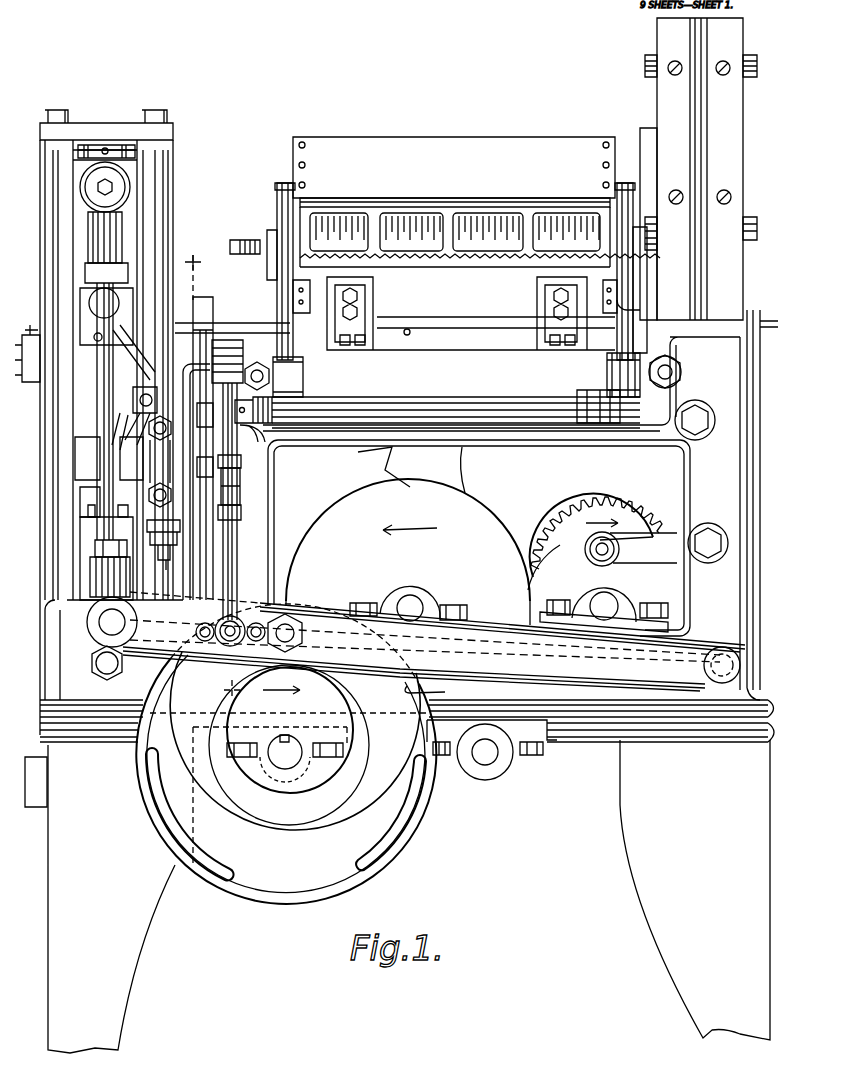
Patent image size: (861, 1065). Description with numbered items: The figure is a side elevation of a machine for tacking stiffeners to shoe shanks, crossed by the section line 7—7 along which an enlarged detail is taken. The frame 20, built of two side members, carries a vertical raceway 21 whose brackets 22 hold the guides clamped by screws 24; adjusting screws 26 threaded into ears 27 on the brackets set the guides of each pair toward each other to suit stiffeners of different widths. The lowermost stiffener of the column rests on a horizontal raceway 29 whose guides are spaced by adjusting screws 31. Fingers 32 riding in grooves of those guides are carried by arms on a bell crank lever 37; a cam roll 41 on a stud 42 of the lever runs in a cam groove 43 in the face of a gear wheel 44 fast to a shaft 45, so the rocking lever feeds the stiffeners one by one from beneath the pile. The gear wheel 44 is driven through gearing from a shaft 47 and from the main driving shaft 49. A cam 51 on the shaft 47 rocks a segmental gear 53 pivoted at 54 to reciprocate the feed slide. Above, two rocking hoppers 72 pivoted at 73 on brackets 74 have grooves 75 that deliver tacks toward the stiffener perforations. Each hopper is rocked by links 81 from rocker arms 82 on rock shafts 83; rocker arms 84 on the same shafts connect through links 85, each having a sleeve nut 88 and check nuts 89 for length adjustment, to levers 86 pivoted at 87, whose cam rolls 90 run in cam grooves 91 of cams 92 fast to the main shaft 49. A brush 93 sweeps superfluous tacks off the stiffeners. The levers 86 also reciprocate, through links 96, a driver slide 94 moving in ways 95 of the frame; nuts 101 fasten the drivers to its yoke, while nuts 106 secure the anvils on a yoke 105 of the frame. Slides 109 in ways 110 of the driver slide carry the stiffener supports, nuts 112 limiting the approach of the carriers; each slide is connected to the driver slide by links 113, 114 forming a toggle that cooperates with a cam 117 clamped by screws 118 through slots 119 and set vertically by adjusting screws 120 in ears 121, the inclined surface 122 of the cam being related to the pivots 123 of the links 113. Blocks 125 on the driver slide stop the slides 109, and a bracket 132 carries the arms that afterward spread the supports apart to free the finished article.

The section line 7— 7 is at (290, 475).
The frame 20 is at (692, 462).
The vertical raceway 21 is at (716, 169).
The brackets 22 is at (666, 118).
The screws 24 is at (675, 75).
The adjusting screws 26 is at (645, 66).
The ears 27 is at (650, 80).
The horizontal raceway 29 is at (470, 330).
The adjusting screws 31 is at (257, 370).
The fingers 32 is at (766, 318).
The bell crank lever 37 is at (665, 535).
The cam roll 41 is at (590, 558).
The stud 42 is at (605, 549).
The cam groove 43 is at (560, 550).
The gear wheel 44 is at (587, 500).
The shaft 45 is at (604, 622).
The shaft 47 is at (409, 605).
The main driving shaft 49 is at (288, 770).
The cam 51 is at (480, 520).
The segmental gear 53 is at (455, 466).
The pivot 54 is at (487, 765).
The rocking hoppers 72 is at (452, 141).
The pivots 73 is at (246, 240).
The brackets 74 is at (272, 232).
The grooves 75 is at (431, 217).
The links 81 is at (280, 270).
The rocker arms 82 is at (305, 381).
The rock shafts 83 is at (460, 412).
The rocker arms 84 is at (250, 438).
The links 85 is at (240, 562).
The levers 86 is at (110, 676).
The pivot 87 is at (720, 648).
The sleeve nut 88 is at (240, 485).
The check nuts 89 is at (240, 462).
The cam rolls 90 is at (306, 604).
The cam grooves 91 is at (437, 696).
The cams 92 is at (252, 898).
The brush 93 is at (230, 302).
The driver slide 94 is at (82, 172).
The ways 95 is at (85, 490).
The links 96 is at (105, 448).
The nuts 101 is at (105, 150).
The cross piece or yoke 105 is at (92, 533).
The nuts 106 is at (92, 515).
The slides 109 is at (90, 316).
The ways 110 is at (132, 262).
The nuts 112 is at (93, 300).
The link 113 is at (128, 362).
The link 114 is at (125, 425).
The cam 117 is at (152, 478).
The screws 118 is at (162, 462).
The slots 119 is at (151, 470).
The adjusting screws 120 is at (165, 572).
The ears 121 is at (172, 560).
The inclined surface 122 is at (149, 402).
The pivots 123 is at (94, 336).
The blocks 125 is at (85, 468).
The bracket 132 is at (27, 363).